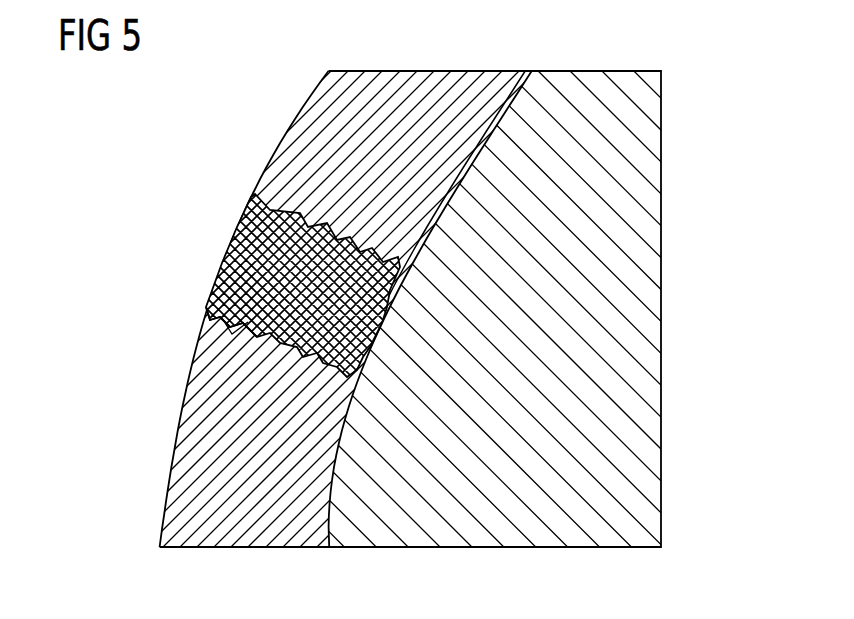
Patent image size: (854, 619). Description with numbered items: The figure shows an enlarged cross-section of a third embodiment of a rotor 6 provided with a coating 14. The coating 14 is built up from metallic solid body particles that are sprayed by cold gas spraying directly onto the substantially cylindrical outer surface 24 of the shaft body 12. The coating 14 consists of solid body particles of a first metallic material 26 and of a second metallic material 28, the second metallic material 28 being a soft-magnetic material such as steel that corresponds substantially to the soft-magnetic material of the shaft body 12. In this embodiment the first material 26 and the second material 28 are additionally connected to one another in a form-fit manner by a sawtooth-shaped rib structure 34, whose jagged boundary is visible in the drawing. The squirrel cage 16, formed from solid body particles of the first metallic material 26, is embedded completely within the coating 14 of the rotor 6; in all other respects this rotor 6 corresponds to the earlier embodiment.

The rotor 6 is at (690, 233).
The shaft body 12 is at (648, 456).
The coating 14 is at (318, 126).
The squirrel cage 16 is at (237, 240).
The substantially cylindrical outer surface 24 is at (478, 125).
The first metallic material 26 is at (220, 297).
The second metallic material 28 is at (177, 490).
The rib structure 34 is at (230, 332).